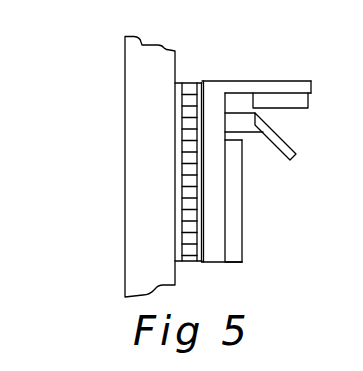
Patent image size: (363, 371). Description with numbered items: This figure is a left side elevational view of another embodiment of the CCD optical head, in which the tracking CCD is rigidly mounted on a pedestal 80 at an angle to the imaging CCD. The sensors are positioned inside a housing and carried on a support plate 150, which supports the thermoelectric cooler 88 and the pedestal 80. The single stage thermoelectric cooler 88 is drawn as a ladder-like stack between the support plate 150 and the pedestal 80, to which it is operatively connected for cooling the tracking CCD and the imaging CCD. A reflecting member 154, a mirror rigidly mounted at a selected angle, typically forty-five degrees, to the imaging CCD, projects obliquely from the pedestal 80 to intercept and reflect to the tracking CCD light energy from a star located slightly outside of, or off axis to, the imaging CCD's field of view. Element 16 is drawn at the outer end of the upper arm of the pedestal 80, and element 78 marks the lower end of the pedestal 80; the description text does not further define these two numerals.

The plate 16 is at (300, 110).
The lower end of bracket 78 is at (243, 261).
The pedestal 80 is at (216, 90).
The thermoelectric cooler 88 is at (197, 83).
The support plate 150 is at (128, 187).
The reflecting member 154 is at (292, 160).